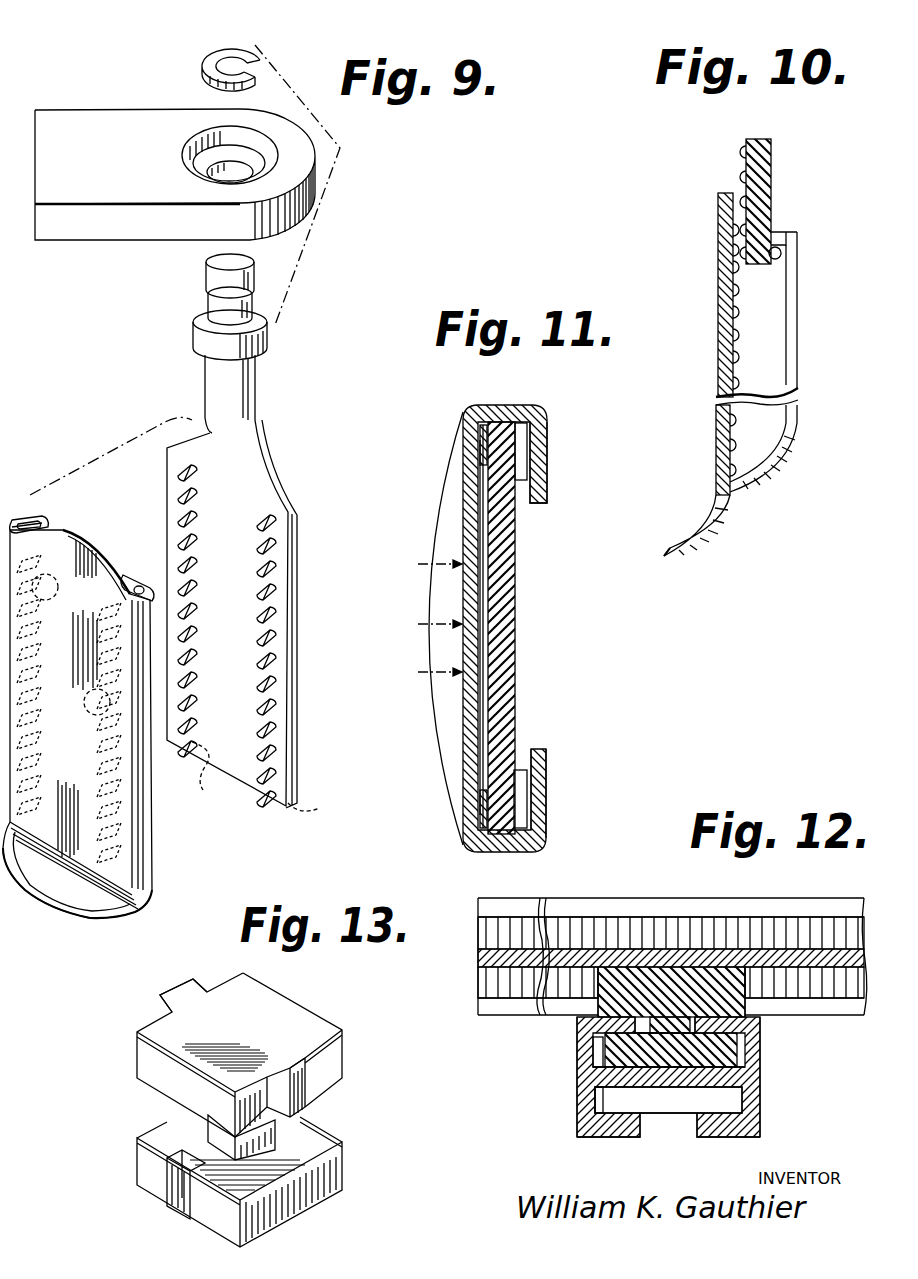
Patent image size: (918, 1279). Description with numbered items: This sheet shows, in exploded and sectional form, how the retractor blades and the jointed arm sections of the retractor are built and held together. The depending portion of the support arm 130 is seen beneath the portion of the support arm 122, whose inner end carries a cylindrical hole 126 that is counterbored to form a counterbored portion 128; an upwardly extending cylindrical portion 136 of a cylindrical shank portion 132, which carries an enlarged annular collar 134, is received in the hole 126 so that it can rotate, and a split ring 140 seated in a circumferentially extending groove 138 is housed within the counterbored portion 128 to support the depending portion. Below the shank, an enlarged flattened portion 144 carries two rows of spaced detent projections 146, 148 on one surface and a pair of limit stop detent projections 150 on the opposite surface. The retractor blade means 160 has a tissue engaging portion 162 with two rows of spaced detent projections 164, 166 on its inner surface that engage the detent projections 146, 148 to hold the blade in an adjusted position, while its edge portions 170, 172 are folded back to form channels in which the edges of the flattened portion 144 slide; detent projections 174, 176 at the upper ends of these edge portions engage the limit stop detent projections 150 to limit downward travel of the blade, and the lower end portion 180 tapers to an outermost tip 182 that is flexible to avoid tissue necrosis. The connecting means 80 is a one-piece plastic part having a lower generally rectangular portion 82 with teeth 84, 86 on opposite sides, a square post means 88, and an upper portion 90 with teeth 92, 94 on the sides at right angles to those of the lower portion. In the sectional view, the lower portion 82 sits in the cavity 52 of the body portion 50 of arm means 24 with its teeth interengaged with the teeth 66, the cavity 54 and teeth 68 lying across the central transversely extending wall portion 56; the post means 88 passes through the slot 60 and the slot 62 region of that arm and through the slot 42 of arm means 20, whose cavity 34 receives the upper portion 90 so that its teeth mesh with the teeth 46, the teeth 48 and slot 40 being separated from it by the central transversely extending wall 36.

In FIG. 9, the split ring 140 is at (207, 58).
In FIG. 9, the portion of the support arm 122 is at (100, 120).
In FIG. 9, the counterbored portion 128 is at (192, 152).
In FIG. 9, the cylindrical hole 126 is at (212, 174).
In FIG. 9, the circumferentially extending groove 138 is at (208, 280).
In FIG. 9, the upwardly extending cylindrical portion 136 is at (212, 310).
In FIG. 9, the enlarged annular collar 134 is at (196, 340).
In FIG. 9, the cylindrical shank portion 132 is at (207, 384).
In FIG. 9, the depending portion of the support arm 130 is at (265, 403).
In FIG. 9, the enlarged flattened portion 144 is at (250, 498).
In FIG. 10, the enlarged flattened portion 144 is at (772, 170).
In FIG. 11, the enlarged flattened portion 144 is at (508, 625).
In FIG. 9, the detent projections 146 is at (192, 587).
In FIG. 10, the detent projections 146 is at (740, 162).
In FIG. 11, the detent projections 146 is at (479, 445).
In FIG. 9, the detent projections 148 is at (262, 684).
In FIG. 11, the detent projections 148 is at (481, 800).
In FIG. 9, the limit stop detent projections 150 is at (268, 776).
In FIG. 10, the limit stop detent projections 150 is at (781, 253).
In FIG. 11, the limit stop detent projections 150 is at (527, 450).
In FIG. 9, the retractor blade means 160 is at (158, 842).
In FIG. 10, the retractor blade means 160 is at (716, 243).
In FIG. 11, the retractor blade means 160 is at (545, 405).
In FIG. 9, the tissue engaging portion 162 is at (76, 542).
In FIG. 10, the tissue engaging portion 162 is at (718, 335).
In FIG. 11, the tissue engaging portion 162 is at (477, 708).
In FIG. 9, the detent projections 164 is at (46, 592).
In FIG. 10, the detent projections 164 is at (738, 327).
In FIG. 9, the detent projections 166 is at (100, 704).
In FIG. 9, the edge portion 170 is at (34, 518).
In FIG. 10, the edge portion 170 is at (798, 338).
In FIG. 11, the edge portion 170 is at (548, 482).
In FIG. 9, the edge portion 172 is at (128, 580).
In FIG. 11, the edge portion 172 is at (546, 752).
In FIG. 9, the detent projection 174 is at (42, 526).
In FIG. 10, the detent projection 174 is at (780, 232).
In FIG. 9, the detent projection 176 is at (141, 586).
In FIG. 9, the lower end portion 180 is at (135, 909).
In FIG. 10, the lower end portion 180 is at (705, 540).
In FIG. 9, the outermost tip 182 is at (60, 914).
In FIG. 10, the outermost tip 182 is at (664, 556).
In FIG. 12, the arm means 20 is at (620, 892).
In FIG. 12, the arm means 24 is at (547, 1089).
In FIG. 12, the cavity 34 is at (862, 1002).
In FIG. 12, the central transversely extending wall 36 is at (481, 959).
In FIG. 12, the slot 40 is at (780, 901).
In FIG. 12, the slot 42 is at (830, 1012).
In FIG. 12, the teeth 46 is at (508, 994).
In FIG. 12, the teeth 48 is at (518, 916).
In FIG. 12, the body portion 50 is at (760, 1053).
In FIG. 12, the cavity 52 is at (745, 1072).
In FIG. 12, the cavity 54 is at (759, 1117).
In FIG. 12, the central transversely extending wall portion 56 is at (601, 1072).
In FIG. 12, the slot 60 is at (656, 1022).
In FIG. 12, the slot 62 is at (645, 1130).
In FIG. 12, the teeth 66 is at (595, 1047).
In FIG. 12, the teeth 68 is at (596, 1096).
In FIG. 13, the connecting means 80 is at (131, 1198).
In FIG. 12, the lower generally rectangular portion 82 is at (648, 1070).
In FIG. 13, the lower generally rectangular portion 82 is at (288, 1212).
In FIG. 13, the teeth 84 is at (185, 1222).
In FIG. 13, the teeth 86 is at (312, 1114).
In FIG. 12, the post means 88 is at (700, 1011).
In FIG. 13, the post means 88 is at (210, 1132).
In FIG. 12, the upper portion 90 is at (746, 1012).
In FIG. 13, the upper portion 90 is at (290, 1010).
In FIG. 13, the teeth 92 is at (196, 990).
In FIG. 13, the teeth 94 is at (300, 1062).